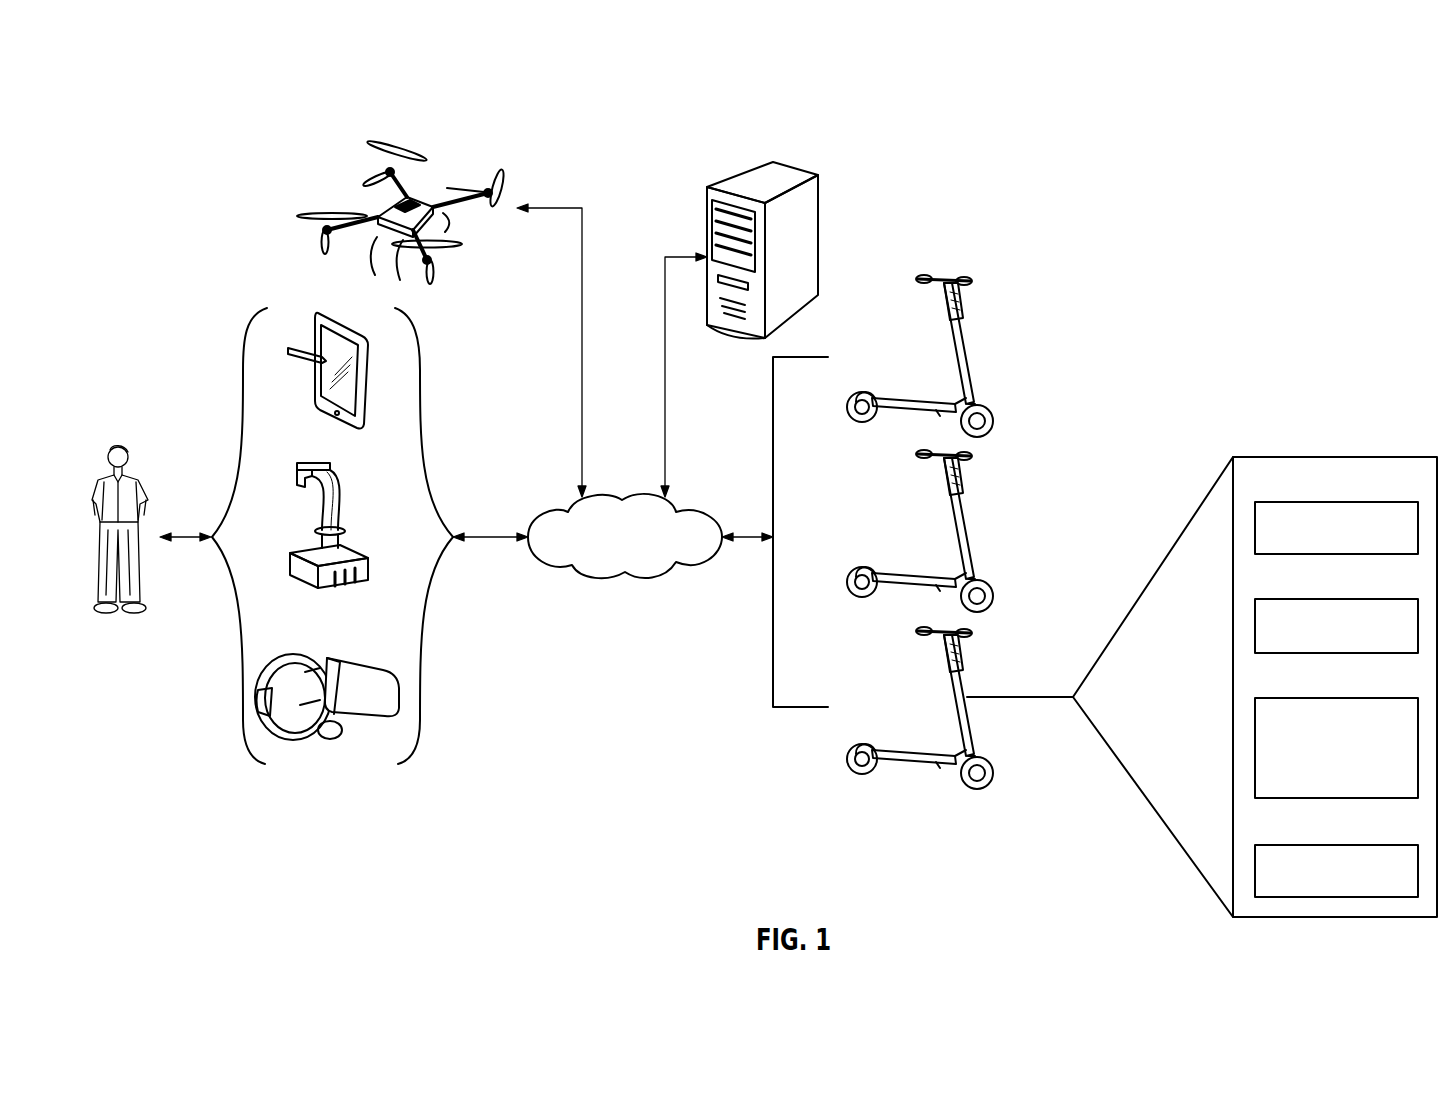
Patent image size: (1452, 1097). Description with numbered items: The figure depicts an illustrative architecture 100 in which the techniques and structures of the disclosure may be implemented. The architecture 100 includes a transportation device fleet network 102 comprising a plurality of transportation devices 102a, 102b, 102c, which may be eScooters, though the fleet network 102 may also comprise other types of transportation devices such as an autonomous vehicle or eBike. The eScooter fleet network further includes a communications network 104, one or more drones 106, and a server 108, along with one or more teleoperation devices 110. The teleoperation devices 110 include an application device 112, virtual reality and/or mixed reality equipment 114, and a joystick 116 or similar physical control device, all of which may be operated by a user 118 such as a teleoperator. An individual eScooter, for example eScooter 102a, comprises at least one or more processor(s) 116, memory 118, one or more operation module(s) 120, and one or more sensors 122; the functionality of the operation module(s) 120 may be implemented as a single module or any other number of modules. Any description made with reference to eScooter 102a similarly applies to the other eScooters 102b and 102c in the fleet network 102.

The illustrative architecture 100 is at (1219, 145).
The transportation device fleet network 102 is at (772, 455).
The transportation device 102a is at (973, 360).
The transportation device 102b is at (955, 531).
The transportation device 102c is at (957, 708).
The communications network 104 is at (645, 552).
The drone 106 is at (433, 140).
The server 108 is at (818, 236).
The teleoperation device 110 is at (235, 462).
The application device 112 is at (310, 303).
The virtual reality and/or mixed reality equipment 114 is at (327, 640).
The joystick 116 is at (333, 460).
The user 118 is at (122, 437).
The operation module 120 is at (1318, 698).
The sensor 122 is at (1318, 845).